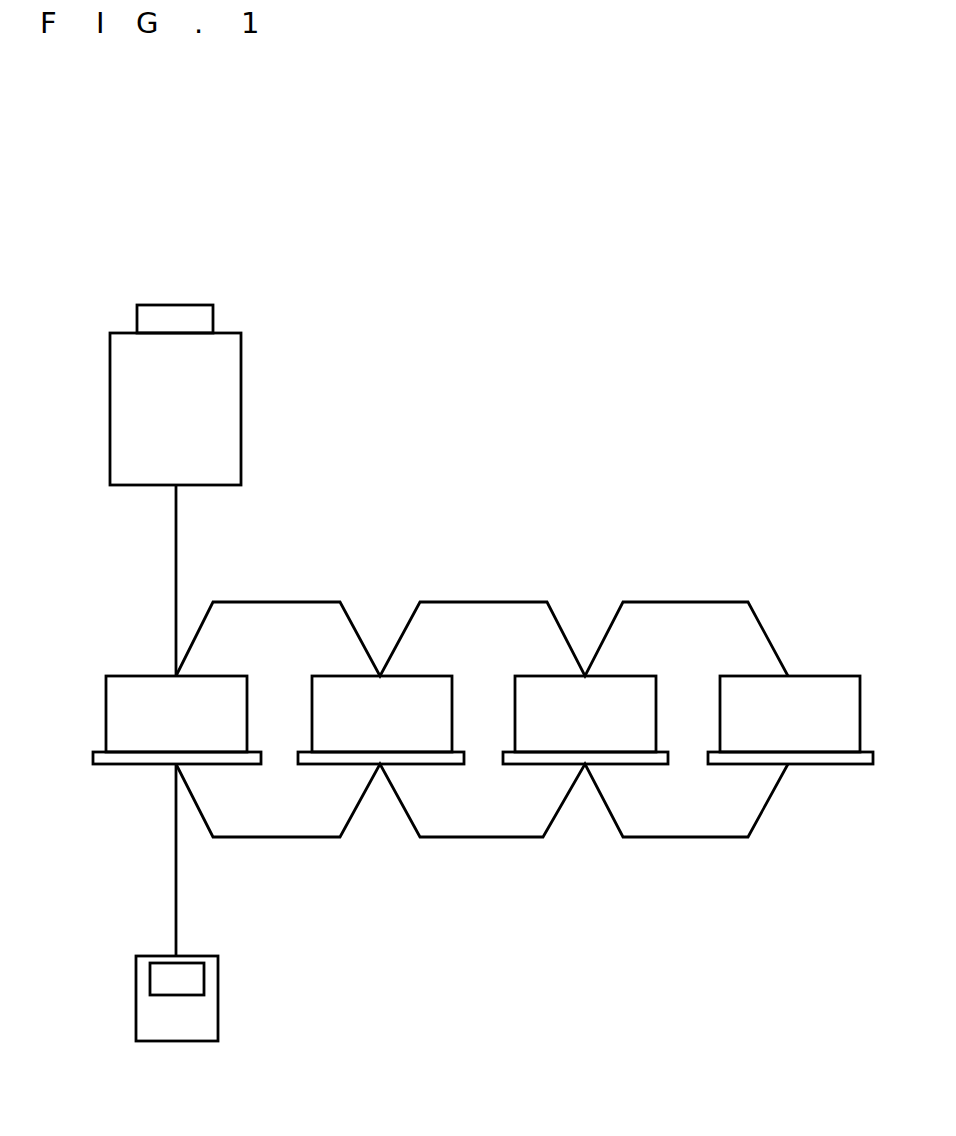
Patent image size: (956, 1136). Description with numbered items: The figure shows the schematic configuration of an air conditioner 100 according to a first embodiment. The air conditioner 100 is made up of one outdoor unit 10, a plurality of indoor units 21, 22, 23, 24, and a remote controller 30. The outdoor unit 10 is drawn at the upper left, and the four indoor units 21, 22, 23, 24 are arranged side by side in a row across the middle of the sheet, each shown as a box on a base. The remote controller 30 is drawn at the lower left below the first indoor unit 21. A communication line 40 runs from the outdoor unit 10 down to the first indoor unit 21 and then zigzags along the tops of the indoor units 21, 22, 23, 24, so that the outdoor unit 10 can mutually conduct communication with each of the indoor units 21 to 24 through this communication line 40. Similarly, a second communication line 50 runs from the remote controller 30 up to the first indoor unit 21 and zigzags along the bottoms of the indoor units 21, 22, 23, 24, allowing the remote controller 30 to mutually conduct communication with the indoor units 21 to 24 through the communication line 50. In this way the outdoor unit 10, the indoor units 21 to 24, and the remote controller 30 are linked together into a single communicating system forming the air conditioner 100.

The air conditioner 100 is at (393, 394).
The outdoor unit 10 is at (241, 406).
The indoor unit 21 is at (122, 676).
The indoor unit 22 is at (325, 676).
The indoor unit 23 is at (532, 676).
The indoor unit 24 is at (740, 676).
The remote controller 30 is at (218, 996).
The communication line 40 is at (275, 602).
The communication line 50 is at (485, 838).